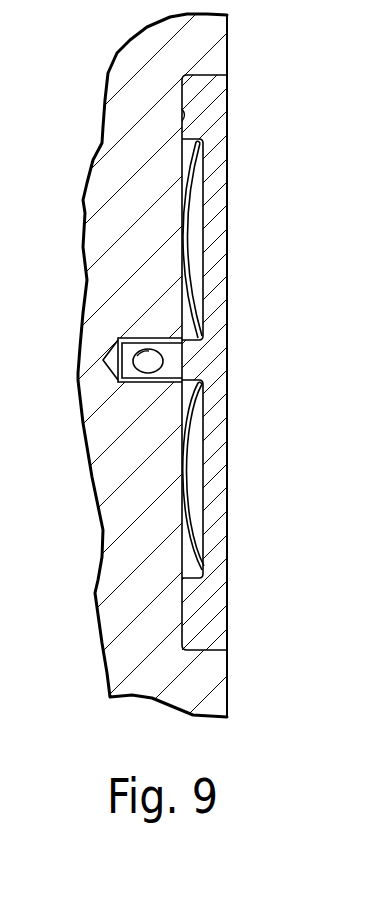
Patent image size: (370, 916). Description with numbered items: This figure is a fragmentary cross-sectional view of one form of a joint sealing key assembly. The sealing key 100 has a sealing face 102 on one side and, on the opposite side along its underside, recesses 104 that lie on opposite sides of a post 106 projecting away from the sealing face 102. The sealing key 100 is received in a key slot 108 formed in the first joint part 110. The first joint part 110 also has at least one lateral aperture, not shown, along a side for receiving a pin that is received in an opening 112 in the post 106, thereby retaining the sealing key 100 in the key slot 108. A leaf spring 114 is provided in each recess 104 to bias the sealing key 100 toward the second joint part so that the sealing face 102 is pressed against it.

The sealing key 100 is at (217, 228).
The sealing face 102 is at (228, 295).
The recess 104 is at (198, 193).
The post 106 is at (128, 354).
The key slot 108 is at (182, 119).
The first joint part 110 is at (153, 80).
The opening 112 is at (150, 340).
The leaf spring 114 is at (197, 420).